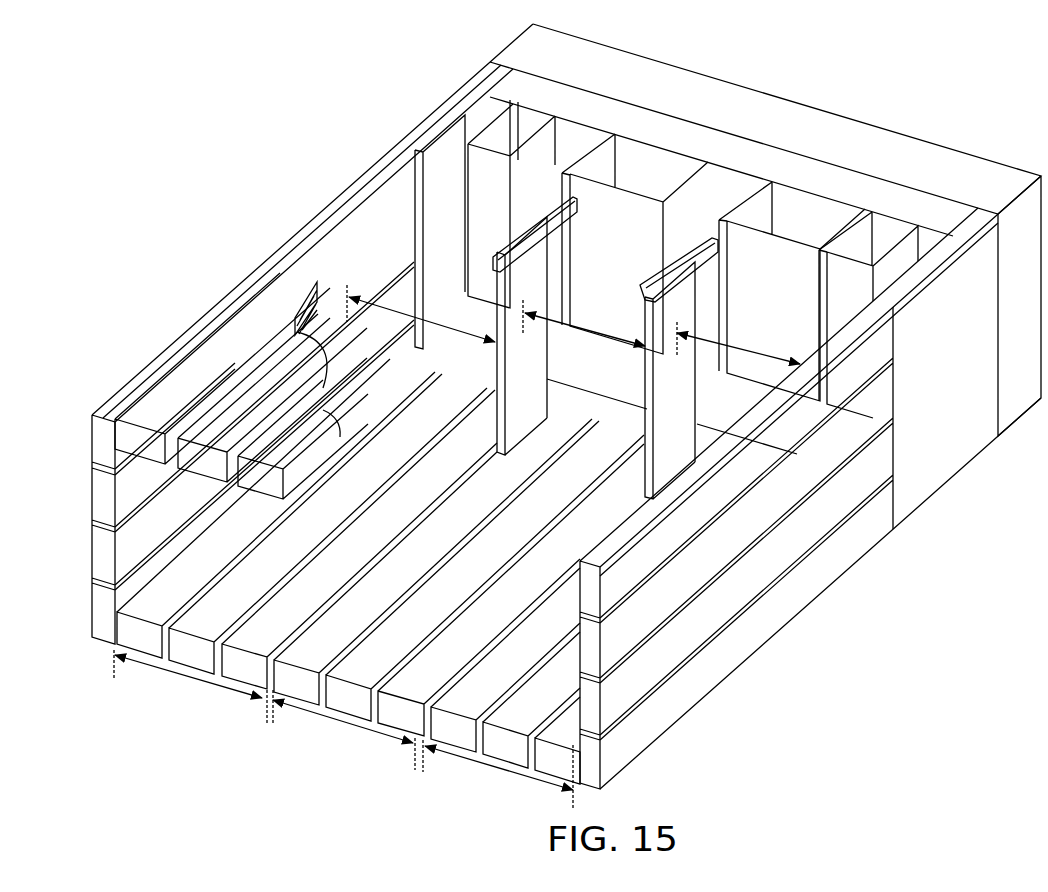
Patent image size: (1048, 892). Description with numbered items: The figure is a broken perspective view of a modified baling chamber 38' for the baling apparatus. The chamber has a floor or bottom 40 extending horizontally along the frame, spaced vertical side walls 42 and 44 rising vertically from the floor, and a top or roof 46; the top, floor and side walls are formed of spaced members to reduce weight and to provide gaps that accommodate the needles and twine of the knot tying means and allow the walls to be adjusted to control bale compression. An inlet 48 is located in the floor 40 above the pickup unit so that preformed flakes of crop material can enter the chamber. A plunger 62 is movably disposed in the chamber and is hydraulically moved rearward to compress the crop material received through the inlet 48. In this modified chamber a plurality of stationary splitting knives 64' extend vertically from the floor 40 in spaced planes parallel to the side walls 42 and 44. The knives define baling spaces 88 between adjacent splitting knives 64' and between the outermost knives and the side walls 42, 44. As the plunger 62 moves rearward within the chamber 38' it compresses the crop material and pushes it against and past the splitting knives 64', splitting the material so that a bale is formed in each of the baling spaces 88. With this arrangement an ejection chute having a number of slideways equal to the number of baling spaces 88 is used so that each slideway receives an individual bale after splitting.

The modified baling chamber 38' is at (312, 221).
The vertical side wall 42 is at (271, 262).
The top or roof 46 is at (263, 412).
The floor or bottom 40 is at (485, 392).
The baling spaces 88 is at (440, 318).
The plunger 62 is at (655, 179).
The stationary splitting knives 64' is at (566, 307).
The inlet 48 is at (613, 374).
The vertical side wall 44 is at (737, 497).